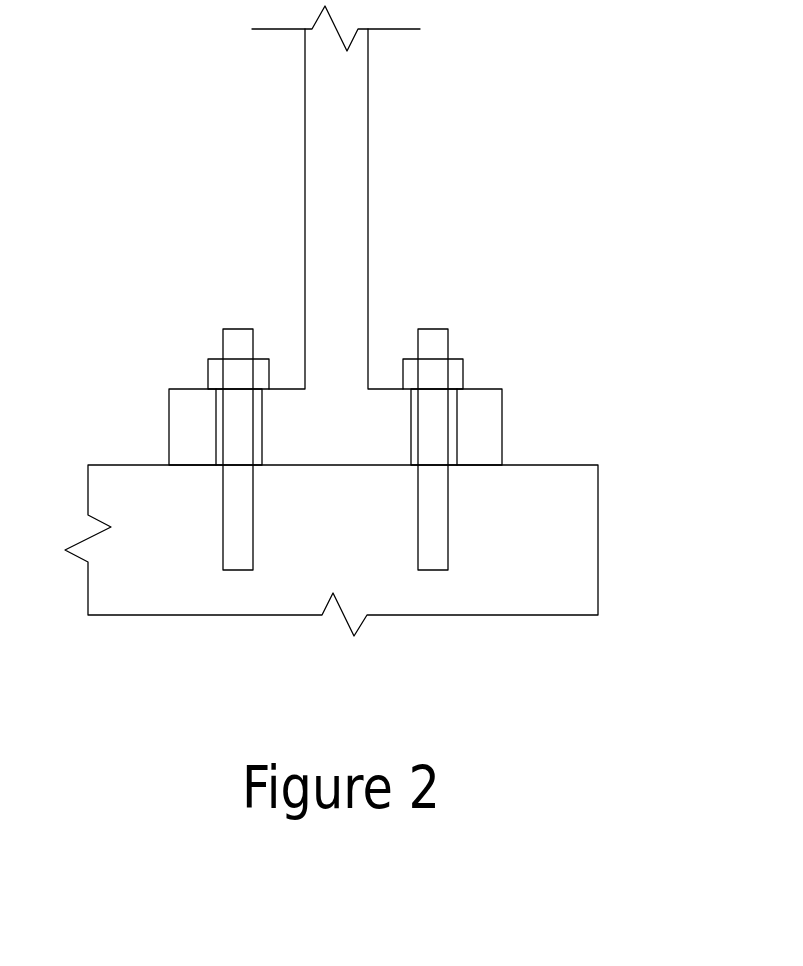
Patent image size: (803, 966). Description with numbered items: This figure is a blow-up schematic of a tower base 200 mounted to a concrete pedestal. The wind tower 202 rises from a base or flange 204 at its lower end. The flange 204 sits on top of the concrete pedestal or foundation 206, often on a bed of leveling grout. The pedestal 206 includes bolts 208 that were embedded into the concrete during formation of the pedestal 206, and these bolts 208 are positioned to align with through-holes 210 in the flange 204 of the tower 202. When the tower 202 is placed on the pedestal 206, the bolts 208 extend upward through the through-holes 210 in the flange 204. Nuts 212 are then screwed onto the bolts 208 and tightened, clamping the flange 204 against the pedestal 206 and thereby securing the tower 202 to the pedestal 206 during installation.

The tower base 200 is at (92, 650).
The wind tower 202 is at (368, 157).
The flange 204 is at (502, 422).
The concrete pedestal 206 is at (598, 537).
The bolts 208 is at (428, 329).
The through-holes 210 is at (216, 427).
The nuts 212 is at (463, 370).